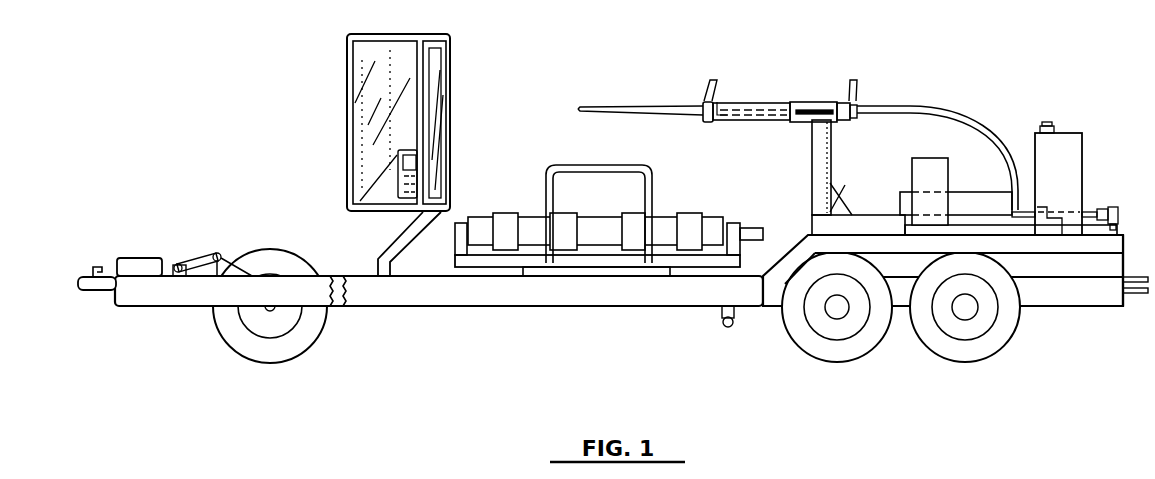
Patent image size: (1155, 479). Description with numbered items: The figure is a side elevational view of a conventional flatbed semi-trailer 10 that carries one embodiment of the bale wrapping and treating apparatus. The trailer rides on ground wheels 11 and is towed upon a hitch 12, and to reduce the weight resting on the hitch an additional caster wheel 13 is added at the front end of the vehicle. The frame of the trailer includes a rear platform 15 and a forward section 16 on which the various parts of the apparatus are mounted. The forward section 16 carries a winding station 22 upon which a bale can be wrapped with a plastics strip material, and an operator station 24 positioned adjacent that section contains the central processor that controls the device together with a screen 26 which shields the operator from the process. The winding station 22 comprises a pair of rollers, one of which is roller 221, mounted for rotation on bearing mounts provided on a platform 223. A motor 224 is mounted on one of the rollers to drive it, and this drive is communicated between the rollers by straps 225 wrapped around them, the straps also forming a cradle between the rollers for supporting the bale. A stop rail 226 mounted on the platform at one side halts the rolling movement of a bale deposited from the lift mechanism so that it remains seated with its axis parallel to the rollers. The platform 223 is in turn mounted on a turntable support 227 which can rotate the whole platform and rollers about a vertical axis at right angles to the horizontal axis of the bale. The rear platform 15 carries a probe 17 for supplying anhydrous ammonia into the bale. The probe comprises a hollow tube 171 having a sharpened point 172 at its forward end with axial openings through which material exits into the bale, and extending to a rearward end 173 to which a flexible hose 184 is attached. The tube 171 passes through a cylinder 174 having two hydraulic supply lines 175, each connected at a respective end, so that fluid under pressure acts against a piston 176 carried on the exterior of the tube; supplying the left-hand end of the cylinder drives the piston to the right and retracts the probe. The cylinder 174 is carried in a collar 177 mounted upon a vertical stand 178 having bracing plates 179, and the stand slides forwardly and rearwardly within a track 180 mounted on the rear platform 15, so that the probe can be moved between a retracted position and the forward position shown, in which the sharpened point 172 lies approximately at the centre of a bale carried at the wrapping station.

The flatbed semi-trailer 10 is at (400, 308).
The ground wheels 11 is at (818, 345).
The hitch 12 is at (93, 291).
The caster wheel 13 is at (300, 333).
The rear platform 15 is at (955, 315).
The forward section 16 is at (470, 311).
The probe 17 is at (799, 109).
The winding station 22 is at (628, 238).
The operator station 24 is at (409, 148).
The screen 26 is at (372, 54).
The hollow tube 171 is at (672, 106).
The sharpened point 172 is at (578, 108).
The rearward end 173 is at (863, 108).
The cylinder 174 is at (748, 121).
The hydraulic supply lines 175 is at (706, 100).
The piston 176 is at (725, 107).
The collar 177 is at (807, 102).
The vertical stand 178 is at (831, 165).
The bracing plates 179 is at (831, 186).
The track 180 is at (880, 226).
The flexible hose 184 is at (962, 109).
The roller 221 is at (600, 228).
The platform 223 is at (707, 264).
The motor 224 is at (752, 234).
The straps 225 is at (716, 183).
The stop rail 226 is at (620, 171).
The turntable support 227 is at (603, 274).